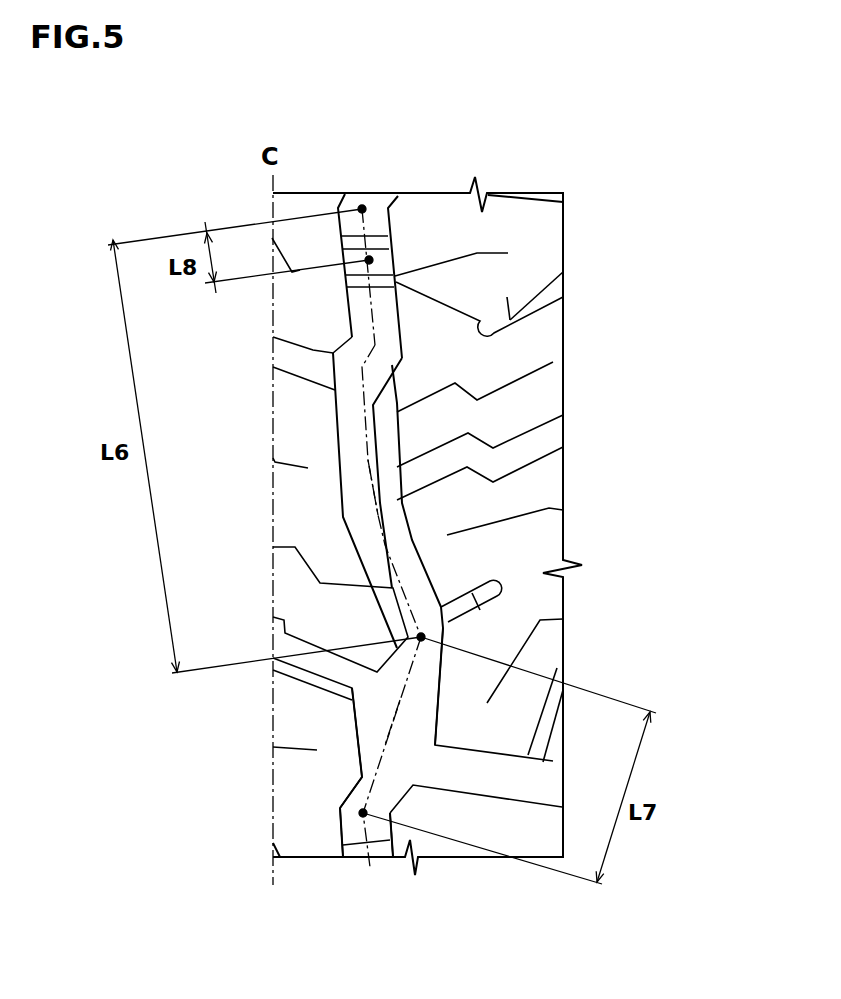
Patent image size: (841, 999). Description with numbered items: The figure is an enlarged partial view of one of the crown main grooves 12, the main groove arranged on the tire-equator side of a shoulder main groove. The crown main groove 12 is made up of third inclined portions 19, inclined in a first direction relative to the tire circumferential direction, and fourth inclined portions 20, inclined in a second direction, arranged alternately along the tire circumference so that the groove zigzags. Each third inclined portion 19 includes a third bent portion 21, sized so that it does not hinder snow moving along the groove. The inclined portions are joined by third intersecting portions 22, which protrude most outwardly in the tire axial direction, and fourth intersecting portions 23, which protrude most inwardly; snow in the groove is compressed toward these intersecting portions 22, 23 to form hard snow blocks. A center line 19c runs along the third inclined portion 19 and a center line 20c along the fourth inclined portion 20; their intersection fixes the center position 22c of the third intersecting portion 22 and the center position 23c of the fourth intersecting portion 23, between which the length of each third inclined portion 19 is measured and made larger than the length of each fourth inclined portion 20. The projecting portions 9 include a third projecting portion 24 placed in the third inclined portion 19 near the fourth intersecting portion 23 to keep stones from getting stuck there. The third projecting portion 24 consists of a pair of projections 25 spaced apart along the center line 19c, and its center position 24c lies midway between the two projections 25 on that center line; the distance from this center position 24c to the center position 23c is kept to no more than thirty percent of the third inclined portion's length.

The crown main groove 12 is at (383, 200).
The third inclined portion 19 is at (357, 438).
The center line of the third inclined portion 19c is at (380, 492).
The fourth inclined portion 20 is at (372, 733).
The center line of the fourth inclined portion 20c is at (380, 722).
The third bent portion 21 is at (387, 364).
The third intersecting portion 22 is at (430, 617).
The center position of the third intersecting portion 22c is at (425, 636).
The fourth intersecting portion 23 is at (352, 205).
The center position of the fourth intersecting portion 23c is at (366, 210).
The third projecting portion 24 is at (652, 328).
The center position of the third projecting portion 24c is at (366, 262).
The projection 25 is at (378, 243).
The projecting portion 9 is at (652, 228).